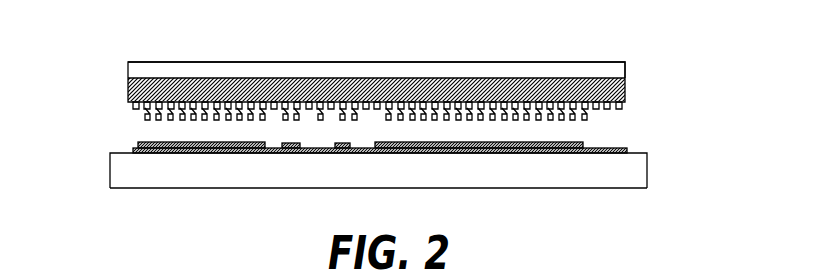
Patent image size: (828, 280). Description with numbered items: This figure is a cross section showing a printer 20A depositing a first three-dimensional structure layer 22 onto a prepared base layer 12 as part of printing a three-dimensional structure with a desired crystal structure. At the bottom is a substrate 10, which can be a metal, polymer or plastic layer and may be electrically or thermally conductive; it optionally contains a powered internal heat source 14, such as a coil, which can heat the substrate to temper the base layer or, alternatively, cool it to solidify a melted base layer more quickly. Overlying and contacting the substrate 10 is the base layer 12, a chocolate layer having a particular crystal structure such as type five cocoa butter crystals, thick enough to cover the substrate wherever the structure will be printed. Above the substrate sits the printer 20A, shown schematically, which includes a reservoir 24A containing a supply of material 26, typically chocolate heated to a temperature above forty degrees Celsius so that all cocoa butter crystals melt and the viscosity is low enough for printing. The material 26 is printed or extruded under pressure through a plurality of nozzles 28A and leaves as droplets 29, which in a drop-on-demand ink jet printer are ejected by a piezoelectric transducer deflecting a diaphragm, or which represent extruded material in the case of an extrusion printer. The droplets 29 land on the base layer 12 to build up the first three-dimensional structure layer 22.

The substrate 10 is at (110, 163).
The base layer 12 is at (143, 148).
The powered internal heat source 14 is at (565, 183).
The printer 20A is at (350, 62).
The first 3D structure layer 22 is at (197, 152).
The reservoir 24A is at (523, 74).
The material 26 is at (232, 79).
The nozzles 28A is at (610, 110).
The droplets 29 is at (157, 117).